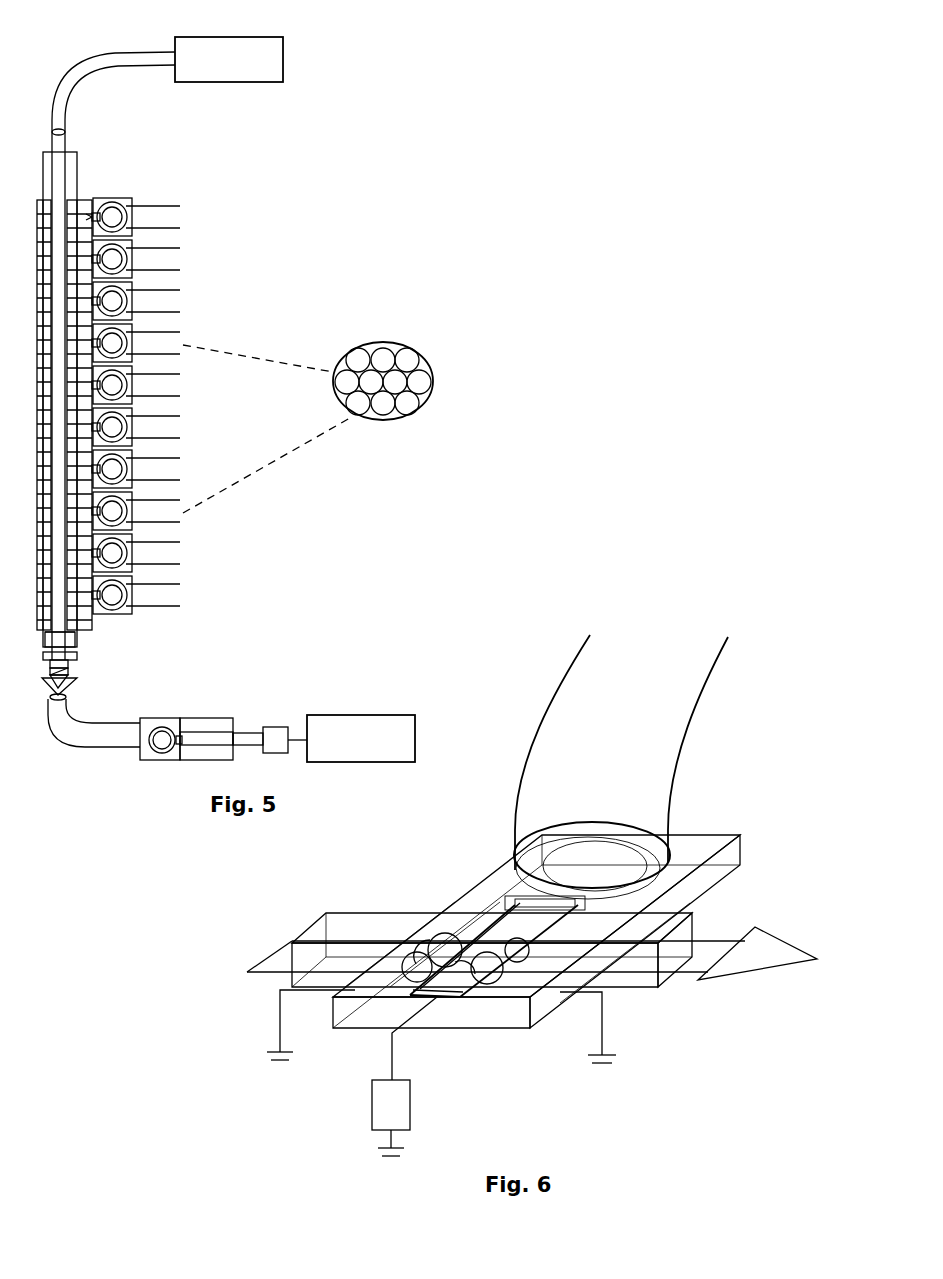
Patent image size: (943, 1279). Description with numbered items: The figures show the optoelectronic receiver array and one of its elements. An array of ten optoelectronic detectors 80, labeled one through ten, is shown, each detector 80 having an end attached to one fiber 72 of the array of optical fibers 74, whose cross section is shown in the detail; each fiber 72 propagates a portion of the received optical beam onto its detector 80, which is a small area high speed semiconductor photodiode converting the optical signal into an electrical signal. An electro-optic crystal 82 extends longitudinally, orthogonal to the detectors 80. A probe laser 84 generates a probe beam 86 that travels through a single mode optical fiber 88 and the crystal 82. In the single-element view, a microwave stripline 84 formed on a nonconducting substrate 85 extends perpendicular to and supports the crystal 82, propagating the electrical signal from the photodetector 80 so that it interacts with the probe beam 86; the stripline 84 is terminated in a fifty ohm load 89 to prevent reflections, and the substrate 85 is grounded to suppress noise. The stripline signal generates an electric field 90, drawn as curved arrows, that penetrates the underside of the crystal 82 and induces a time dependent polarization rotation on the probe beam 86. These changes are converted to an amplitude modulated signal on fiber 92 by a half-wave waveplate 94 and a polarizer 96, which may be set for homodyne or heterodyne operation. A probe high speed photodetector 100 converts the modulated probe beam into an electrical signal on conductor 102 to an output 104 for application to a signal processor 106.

In FIG. 5, the fiber 72 is at (182, 218).
In FIG. 6, the fiber 72 is at (675, 720).
In FIG. 5, the array of optical fibers 74 is at (430, 362).
In FIG. 5, the optoelectronic detector 80 is at (127, 207).
In FIG. 6, the optoelectronic detector 80 is at (538, 875).
In FIG. 5, the electro-optic crystal 82 is at (77, 175).
In FIG. 6, the electro-optic crystal 82 is at (338, 918).
In FIG. 5, the probe laser / microwave stripline 84 is at (283, 45).
In FIG. 6, the probe laser / microwave stripline 84 is at (458, 997).
In FIG. 6, the nonconducting substrate 85 is at (442, 1028).
In FIG. 5, the probe beam 86 is at (65, 142).
In FIG. 6, the probe beam 86 is at (760, 970).
In FIG. 5, the single mode optical fiber 88 is at (122, 75).
In FIG. 6, the 50 ohm load 89 is at (372, 1105).
In FIG. 6, the electric field 90 is at (443, 933).
In FIG. 5, the fiber 92 is at (128, 722).
In FIG. 5, the λ/2 waveplate 94 is at (77, 645).
In FIG. 5, the polarizer 96 is at (77, 657).
In FIG. 5, the probe high speed photodetector 100 is at (200, 718).
In FIG. 5, the conductor 102 is at (252, 732).
In FIG. 5, the output 104 is at (287, 727).
In FIG. 5, the signal processor 106 is at (375, 715).